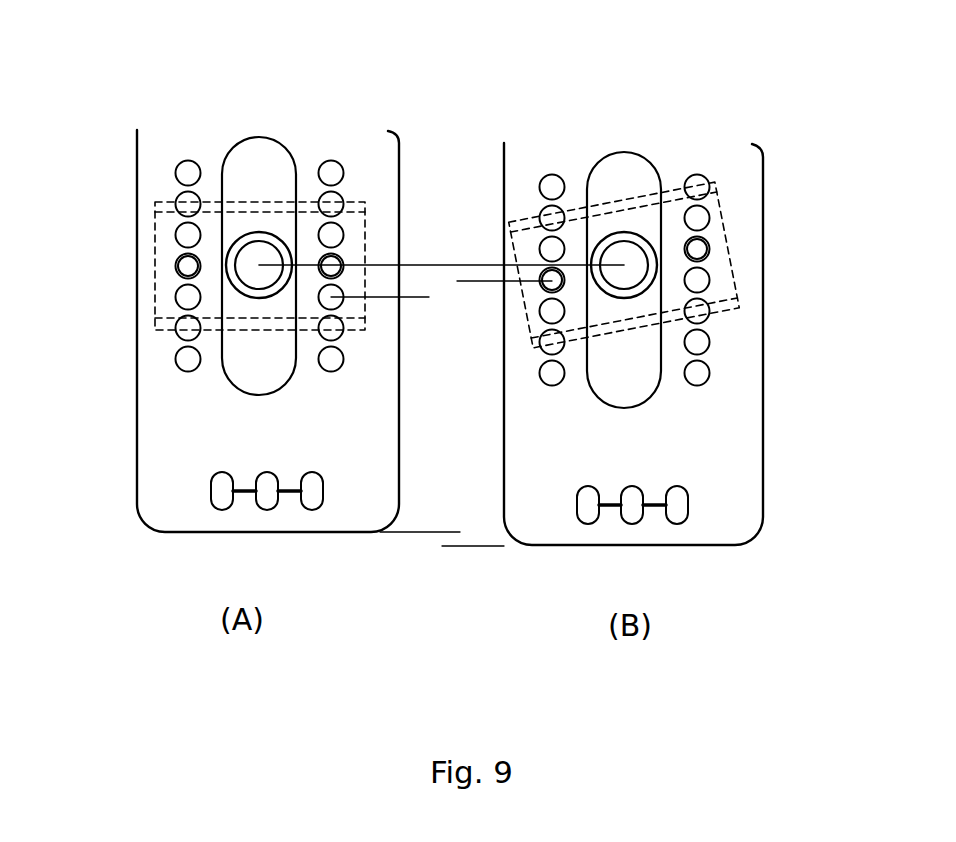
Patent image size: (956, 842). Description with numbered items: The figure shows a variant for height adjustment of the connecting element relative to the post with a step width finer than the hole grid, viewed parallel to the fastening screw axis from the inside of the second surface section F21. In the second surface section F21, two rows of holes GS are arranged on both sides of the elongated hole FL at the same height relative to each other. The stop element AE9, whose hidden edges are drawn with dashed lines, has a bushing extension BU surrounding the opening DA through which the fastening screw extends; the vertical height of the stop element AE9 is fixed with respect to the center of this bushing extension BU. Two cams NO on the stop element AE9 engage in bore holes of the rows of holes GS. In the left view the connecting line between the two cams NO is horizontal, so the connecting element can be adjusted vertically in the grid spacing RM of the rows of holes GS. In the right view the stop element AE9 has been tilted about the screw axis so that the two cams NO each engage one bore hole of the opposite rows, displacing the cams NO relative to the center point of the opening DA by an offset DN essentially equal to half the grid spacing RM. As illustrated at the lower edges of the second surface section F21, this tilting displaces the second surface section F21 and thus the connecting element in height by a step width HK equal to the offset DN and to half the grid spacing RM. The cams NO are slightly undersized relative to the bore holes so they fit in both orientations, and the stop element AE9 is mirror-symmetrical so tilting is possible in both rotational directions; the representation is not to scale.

The elongated hole FL is at (233, 181).
The opening DA is at (257, 250).
The bushing extension BU is at (233, 252).
The cam NO is at (183, 266).
The stop element AE9 is at (153, 247).
The rows of holes GS is at (172, 362).
The second surface section F21 is at (155, 444).
The grid spacing RM is at (421, 233).
The offset DN is at (480, 233).
The step width HK is at (451, 502).